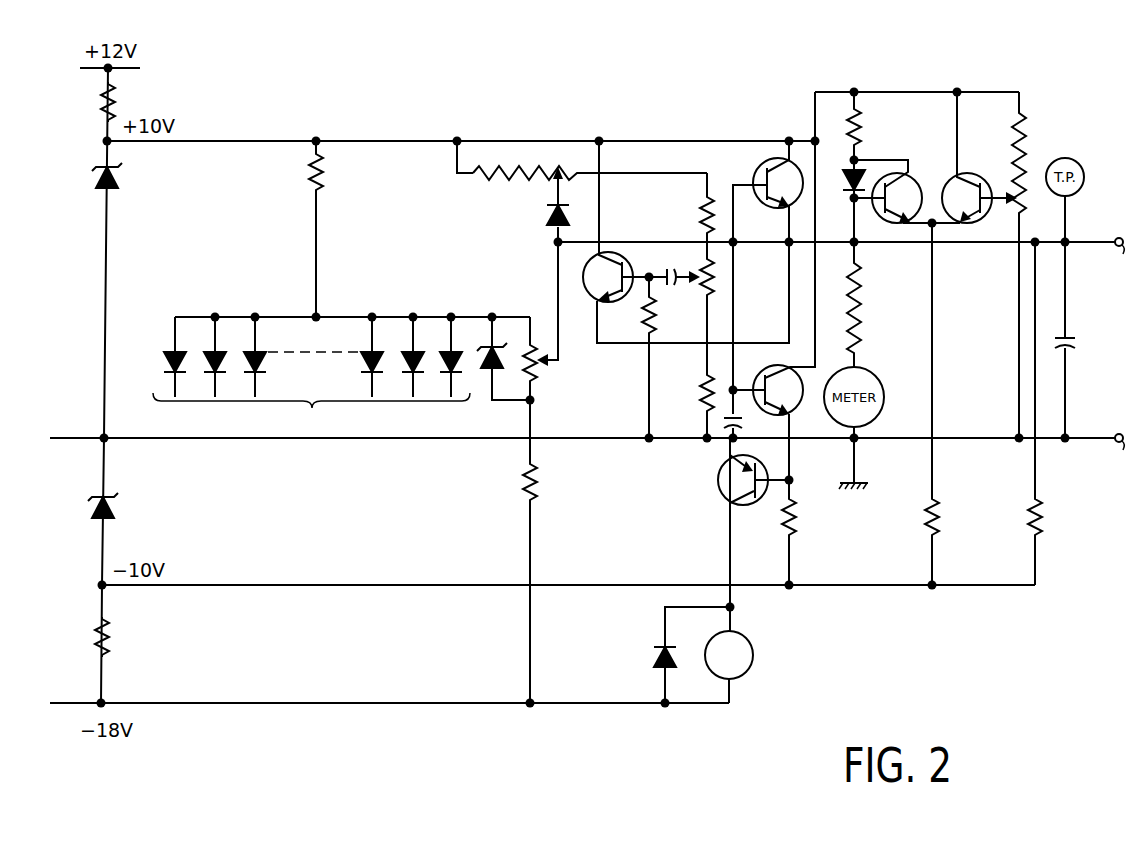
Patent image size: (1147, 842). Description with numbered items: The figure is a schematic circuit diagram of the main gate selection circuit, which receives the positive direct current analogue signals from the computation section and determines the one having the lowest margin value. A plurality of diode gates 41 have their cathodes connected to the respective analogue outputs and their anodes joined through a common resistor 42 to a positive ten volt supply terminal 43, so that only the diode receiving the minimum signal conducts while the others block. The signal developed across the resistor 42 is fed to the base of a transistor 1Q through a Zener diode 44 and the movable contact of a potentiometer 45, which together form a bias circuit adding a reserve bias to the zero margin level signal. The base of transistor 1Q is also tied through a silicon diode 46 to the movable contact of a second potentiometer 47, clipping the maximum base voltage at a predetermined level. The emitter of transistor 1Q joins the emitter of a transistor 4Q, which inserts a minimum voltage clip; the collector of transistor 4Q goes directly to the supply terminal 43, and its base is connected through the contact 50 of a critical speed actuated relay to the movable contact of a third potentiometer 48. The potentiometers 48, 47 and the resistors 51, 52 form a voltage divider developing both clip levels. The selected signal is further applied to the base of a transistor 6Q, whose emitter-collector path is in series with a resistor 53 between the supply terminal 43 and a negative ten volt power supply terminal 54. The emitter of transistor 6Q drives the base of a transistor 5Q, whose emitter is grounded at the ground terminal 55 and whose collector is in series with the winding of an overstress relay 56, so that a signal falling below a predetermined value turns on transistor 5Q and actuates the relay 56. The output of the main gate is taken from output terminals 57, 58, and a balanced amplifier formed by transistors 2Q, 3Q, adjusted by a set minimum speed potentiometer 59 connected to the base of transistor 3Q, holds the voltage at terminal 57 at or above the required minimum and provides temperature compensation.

The diode gates 41 is at (166, 358).
The common resistor 42 is at (312, 180).
The +10 volt supply terminal 43 is at (242, 140).
The Zener diode 44 is at (500, 345).
The potentiometer 45 is at (533, 380).
The silicon diode 46 is at (550, 226).
The second potentiometer 47 is at (548, 180).
The third potentiometer 48 is at (481, 178).
The contact of critical speed actuated relay 50 is at (677, 286).
The resistor 51 is at (700, 215).
The resistor 52 is at (701, 385).
The resistor 53 is at (795, 522).
The negative 10 volt power supply terminal 54 is at (333, 587).
The ground terminal 55 is at (425, 440).
The overstress relay 56 is at (751, 648).
The output terminal 57 is at (843, 257).
The output terminal 58 is at (1112, 454).
The set minimum speed potentiometer 59 is at (1015, 180).
The transistor 1Q is at (758, 168).
The transistor 2Q is at (909, 186).
The transistor 3Q is at (983, 213).
The transistor 4Q is at (606, 302).
The transistor 5Q is at (717, 488).
The transistor 6Q is at (800, 406).